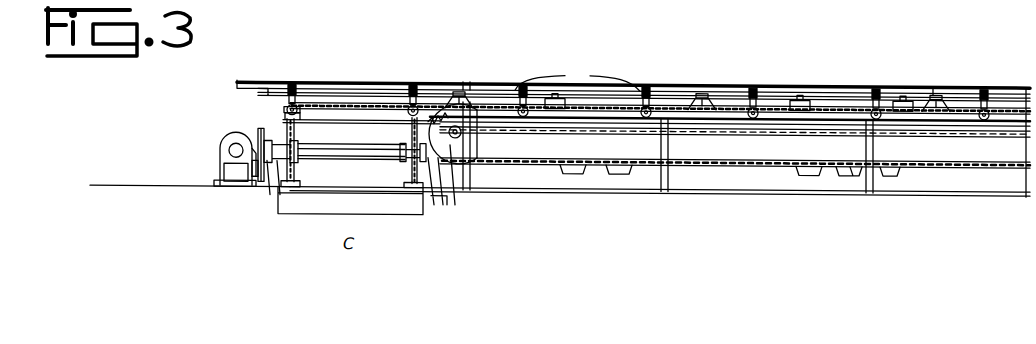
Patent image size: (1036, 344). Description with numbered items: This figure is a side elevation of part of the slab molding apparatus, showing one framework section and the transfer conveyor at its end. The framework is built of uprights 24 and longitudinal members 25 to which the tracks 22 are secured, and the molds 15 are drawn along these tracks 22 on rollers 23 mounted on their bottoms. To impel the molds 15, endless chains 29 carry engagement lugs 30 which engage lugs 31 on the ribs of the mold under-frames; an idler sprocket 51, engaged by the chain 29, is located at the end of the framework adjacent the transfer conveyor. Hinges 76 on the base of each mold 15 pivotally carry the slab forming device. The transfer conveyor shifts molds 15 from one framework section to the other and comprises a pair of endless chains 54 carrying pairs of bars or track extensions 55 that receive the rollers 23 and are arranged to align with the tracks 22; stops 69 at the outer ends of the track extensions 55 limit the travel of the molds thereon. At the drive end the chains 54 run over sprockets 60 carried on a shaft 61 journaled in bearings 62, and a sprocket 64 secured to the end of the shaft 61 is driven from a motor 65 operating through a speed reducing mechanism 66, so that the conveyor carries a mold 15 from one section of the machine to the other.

The molds 15 is at (369, 83).
The track means 22 is at (584, 120).
The rollers 23 is at (408, 107).
The uprights 24 is at (874, 153).
The longitudinal members 25 is at (815, 133).
The endless chains 29 is at (703, 103).
The engagement lugs 30 is at (618, 172).
The lugs 31 is at (458, 88).
The idler sprocket 51 is at (478, 140).
The endless chains 54 is at (293, 123).
The track extensions 55 is at (345, 124).
The sprockets 60 is at (403, 160).
The shaft 61 is at (394, 150).
The bearings 62 is at (285, 188).
The sprocket 64 is at (258, 132).
The motor 65 is at (222, 146).
The speed reducing mechanism 66 is at (220, 170).
The stops 69 is at (284, 110).
The hinges 76 is at (577, 76).